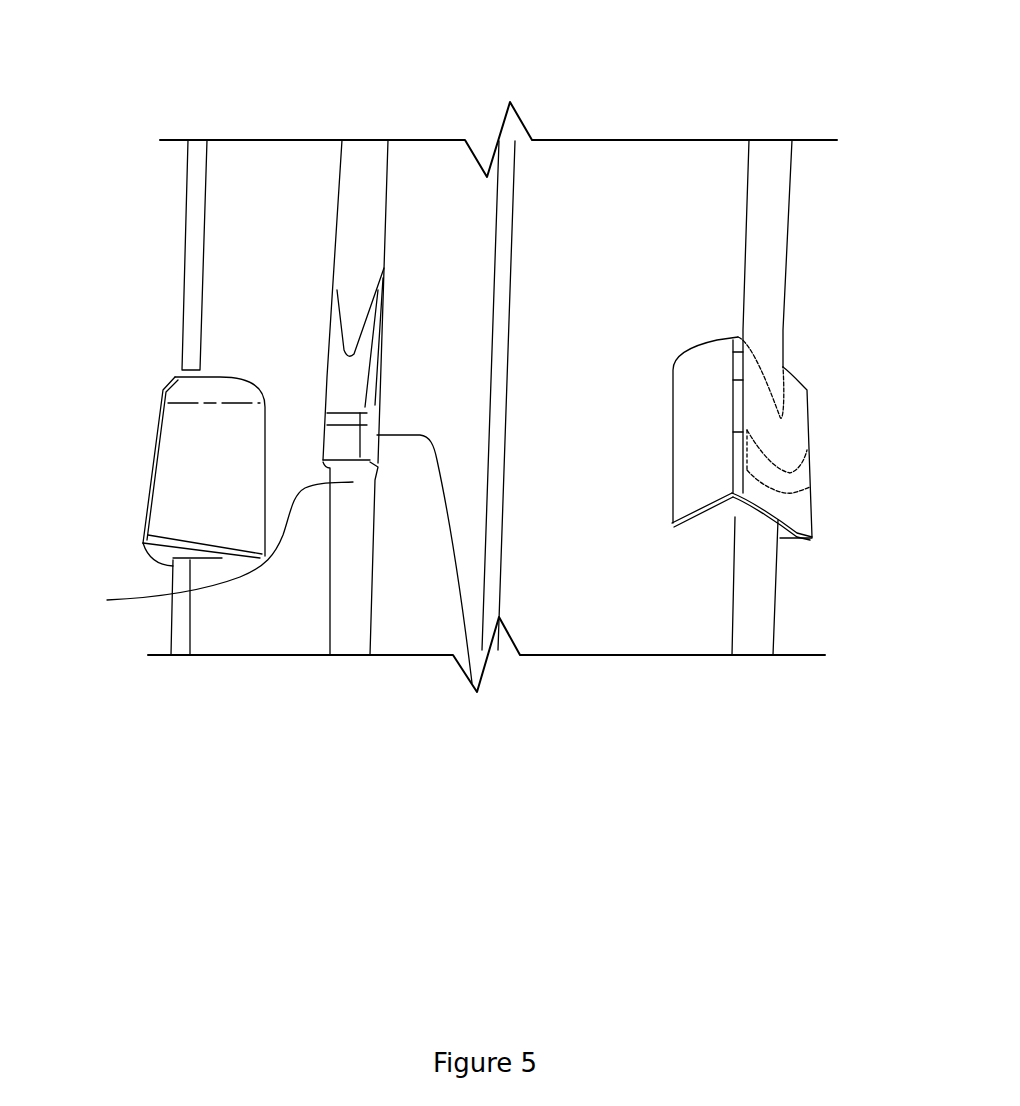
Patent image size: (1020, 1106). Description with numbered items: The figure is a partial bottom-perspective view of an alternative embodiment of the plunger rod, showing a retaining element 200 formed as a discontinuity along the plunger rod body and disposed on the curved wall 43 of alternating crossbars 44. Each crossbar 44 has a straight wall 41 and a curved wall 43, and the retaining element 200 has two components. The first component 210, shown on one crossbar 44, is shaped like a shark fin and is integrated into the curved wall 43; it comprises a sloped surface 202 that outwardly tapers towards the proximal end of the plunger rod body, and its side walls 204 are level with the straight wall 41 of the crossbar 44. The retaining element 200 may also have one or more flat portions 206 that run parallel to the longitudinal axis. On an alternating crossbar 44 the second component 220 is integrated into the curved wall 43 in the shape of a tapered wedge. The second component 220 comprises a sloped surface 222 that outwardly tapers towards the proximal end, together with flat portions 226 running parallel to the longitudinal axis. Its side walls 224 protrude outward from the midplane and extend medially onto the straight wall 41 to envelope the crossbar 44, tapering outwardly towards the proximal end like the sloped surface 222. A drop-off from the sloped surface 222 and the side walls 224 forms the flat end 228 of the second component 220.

The retaining element 200 is at (266, 120).
The straight wall 41 is at (715, 248).
The crossbar 44 is at (338, 268).
The first component 210 is at (322, 383).
The sloped surface 202 is at (350, 393).
The flat portion 206 is at (340, 445).
The curved wall 43 is at (207, 548).
The side wall 204 is at (472, 683).
The second component 220 is at (703, 343).
The side wall 224 is at (700, 423).
The sloped surface 222 is at (777, 440).
The flat portion 226 is at (783, 502).
The flat end 228 is at (725, 510).